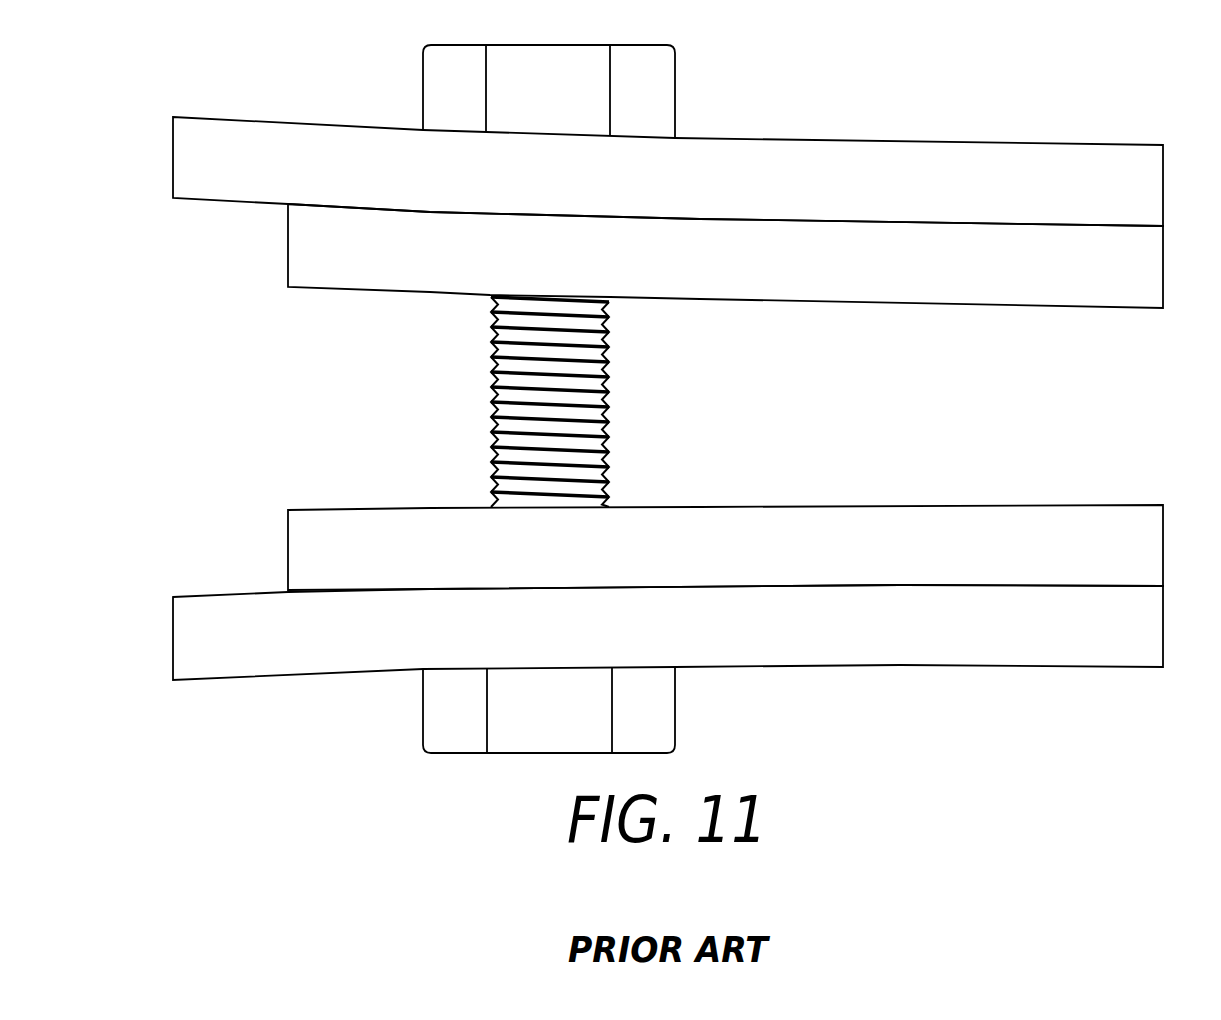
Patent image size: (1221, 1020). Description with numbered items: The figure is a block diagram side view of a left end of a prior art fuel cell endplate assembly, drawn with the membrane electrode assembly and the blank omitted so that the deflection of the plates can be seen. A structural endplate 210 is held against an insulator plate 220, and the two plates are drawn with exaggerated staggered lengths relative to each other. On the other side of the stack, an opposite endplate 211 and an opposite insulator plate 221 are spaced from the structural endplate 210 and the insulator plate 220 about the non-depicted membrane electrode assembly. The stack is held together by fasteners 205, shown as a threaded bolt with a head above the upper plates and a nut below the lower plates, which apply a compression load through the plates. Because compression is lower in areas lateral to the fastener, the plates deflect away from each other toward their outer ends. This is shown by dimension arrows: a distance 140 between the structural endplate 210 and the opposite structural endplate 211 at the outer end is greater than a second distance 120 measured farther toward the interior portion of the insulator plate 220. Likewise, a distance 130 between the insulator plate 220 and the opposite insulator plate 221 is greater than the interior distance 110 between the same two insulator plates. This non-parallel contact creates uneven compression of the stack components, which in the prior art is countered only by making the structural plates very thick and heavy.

The structural endplate 210 is at (262, 173).
The insulator plate 220 is at (368, 264).
The opposite insulator plate 221 is at (364, 564).
The opposite endplate 211 is at (261, 651).
The fasteners 205 is at (677, 696).
The distance 140 is at (212, 201).
The distance 130 is at (340, 291).
The second distance 120 is at (430, 213).
The interior distance 110 is at (680, 300).